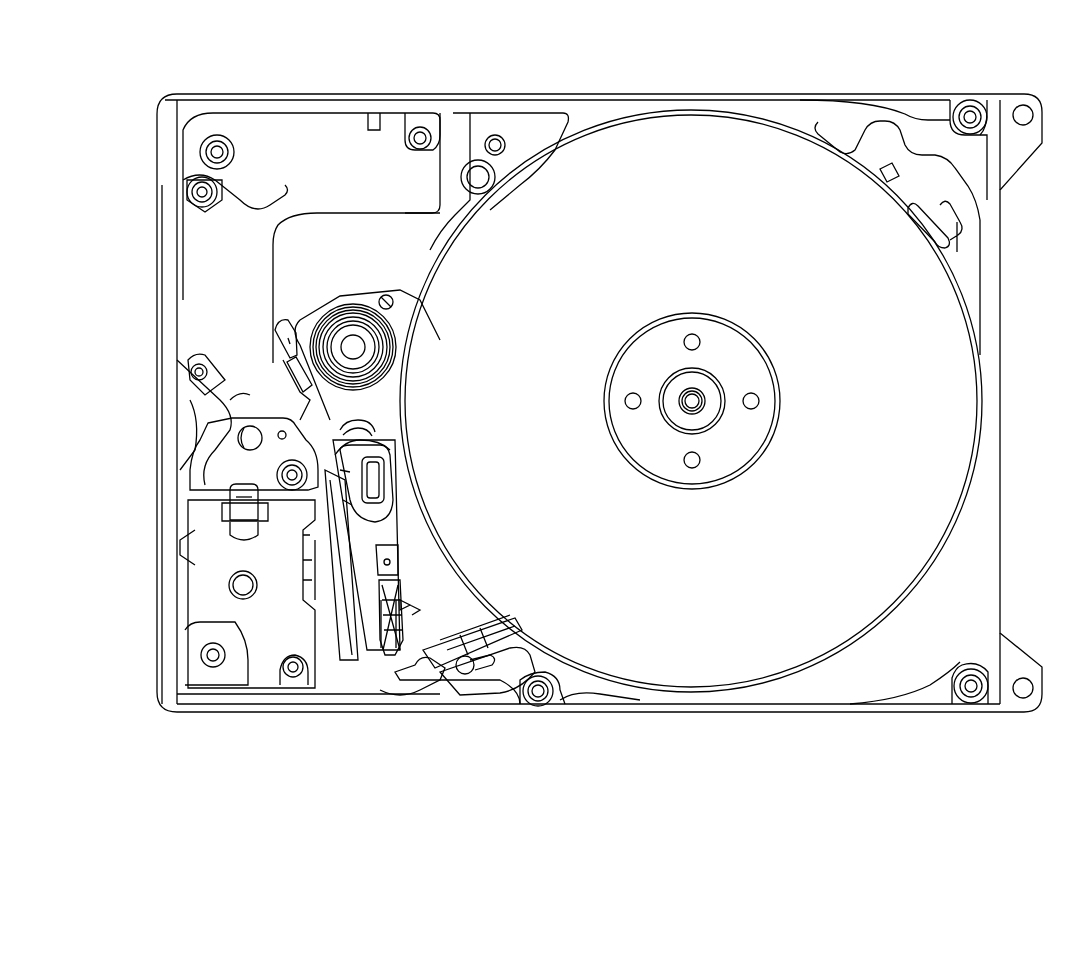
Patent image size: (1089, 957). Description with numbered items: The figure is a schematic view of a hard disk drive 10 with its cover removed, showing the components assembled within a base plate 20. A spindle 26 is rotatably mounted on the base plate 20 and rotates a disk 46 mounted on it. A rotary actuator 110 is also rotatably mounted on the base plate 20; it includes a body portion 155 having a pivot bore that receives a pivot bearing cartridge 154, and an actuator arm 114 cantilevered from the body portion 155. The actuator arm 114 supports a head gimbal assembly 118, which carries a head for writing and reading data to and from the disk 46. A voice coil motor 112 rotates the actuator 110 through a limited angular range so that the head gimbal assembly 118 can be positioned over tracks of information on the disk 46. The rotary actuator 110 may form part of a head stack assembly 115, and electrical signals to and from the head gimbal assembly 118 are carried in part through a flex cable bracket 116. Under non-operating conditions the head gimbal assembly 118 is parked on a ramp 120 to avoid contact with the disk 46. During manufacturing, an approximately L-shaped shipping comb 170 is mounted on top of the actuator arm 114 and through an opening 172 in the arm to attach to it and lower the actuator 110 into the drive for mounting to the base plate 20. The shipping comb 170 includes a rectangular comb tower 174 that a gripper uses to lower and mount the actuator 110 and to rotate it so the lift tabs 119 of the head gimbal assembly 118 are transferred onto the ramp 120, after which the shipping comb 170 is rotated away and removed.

The hard disk drive 10 is at (270, 52).
The base plate 20 is at (990, 341).
The spindle 26 is at (755, 418).
The disk 46 is at (948, 473).
The rotary actuator 110 is at (300, 338).
The voice coil motor 112 is at (197, 240).
The actuator arm 114 is at (330, 430).
The head stack assembly 115 is at (400, 460).
The flex cable bracket 116 is at (207, 595).
The head gimbal assembly 118 is at (377, 583).
The lift tab 119 is at (377, 650).
The ramp 120 is at (430, 632).
The pivot bearing cartridge 154 is at (323, 350).
The body portion 155 is at (317, 387).
The shipping comb 170 is at (372, 530).
The opening 172 is at (363, 427).
The comb tower 174 is at (363, 477).